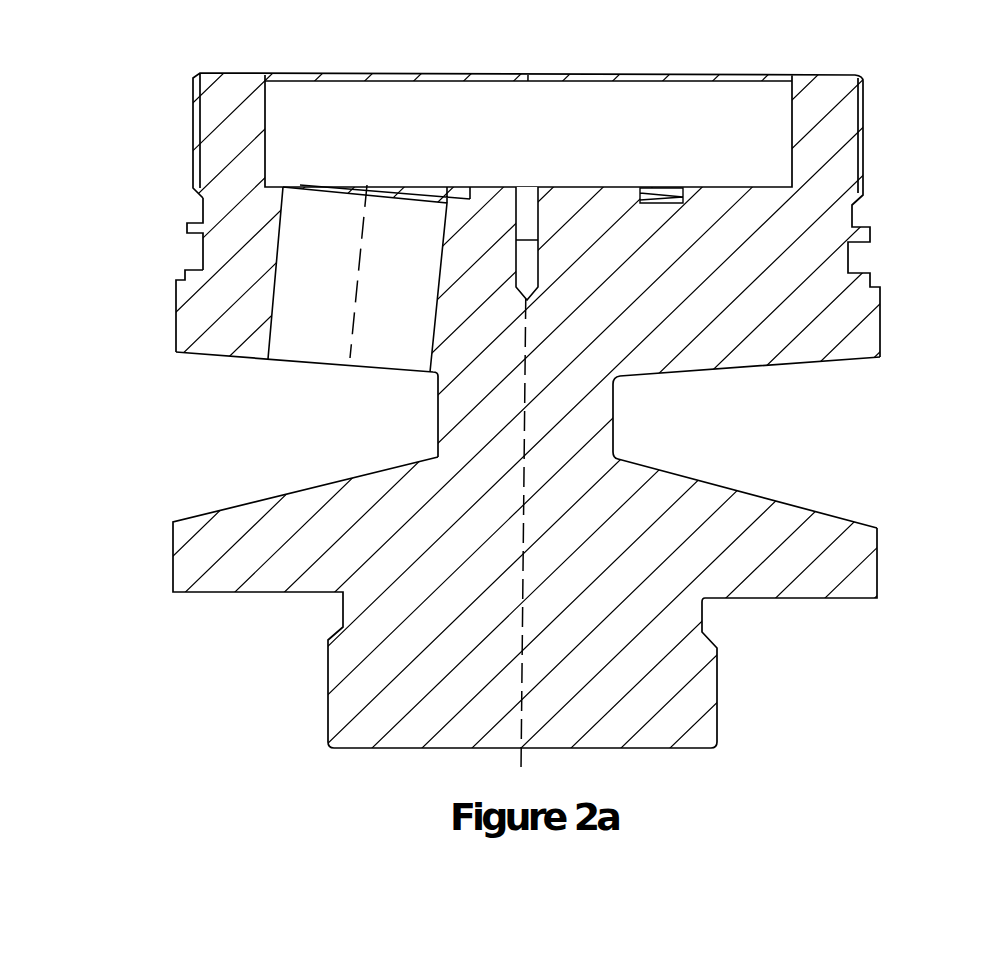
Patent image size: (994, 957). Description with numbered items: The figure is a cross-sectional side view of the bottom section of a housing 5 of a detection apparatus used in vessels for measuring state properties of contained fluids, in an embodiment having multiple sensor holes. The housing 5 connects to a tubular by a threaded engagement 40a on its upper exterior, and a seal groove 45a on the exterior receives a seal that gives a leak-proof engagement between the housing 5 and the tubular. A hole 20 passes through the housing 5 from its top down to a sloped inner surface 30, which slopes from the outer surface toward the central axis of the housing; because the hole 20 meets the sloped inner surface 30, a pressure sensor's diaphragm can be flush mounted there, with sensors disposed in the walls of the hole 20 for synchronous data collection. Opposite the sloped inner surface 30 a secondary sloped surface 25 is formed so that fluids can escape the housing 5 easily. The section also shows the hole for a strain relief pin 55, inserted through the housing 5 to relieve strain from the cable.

The housing 5 is at (130, 443).
The hole 20 is at (308, 290).
The secondary sloped surface 25 is at (780, 500).
The sloped inner surface 30 is at (770, 364).
The threaded engagement 40a is at (218, 74).
The seal groove 45a is at (207, 262).
The strain relief pin 55 is at (540, 186).